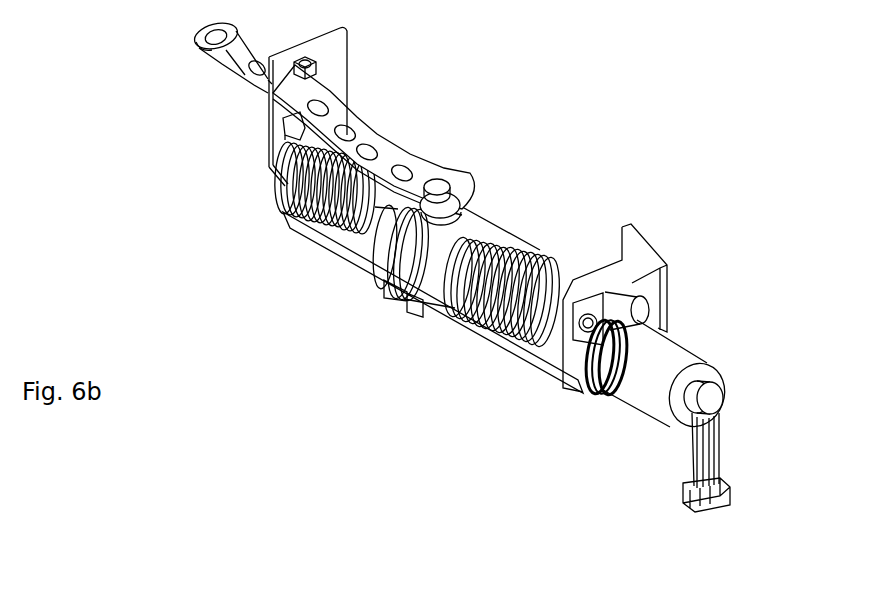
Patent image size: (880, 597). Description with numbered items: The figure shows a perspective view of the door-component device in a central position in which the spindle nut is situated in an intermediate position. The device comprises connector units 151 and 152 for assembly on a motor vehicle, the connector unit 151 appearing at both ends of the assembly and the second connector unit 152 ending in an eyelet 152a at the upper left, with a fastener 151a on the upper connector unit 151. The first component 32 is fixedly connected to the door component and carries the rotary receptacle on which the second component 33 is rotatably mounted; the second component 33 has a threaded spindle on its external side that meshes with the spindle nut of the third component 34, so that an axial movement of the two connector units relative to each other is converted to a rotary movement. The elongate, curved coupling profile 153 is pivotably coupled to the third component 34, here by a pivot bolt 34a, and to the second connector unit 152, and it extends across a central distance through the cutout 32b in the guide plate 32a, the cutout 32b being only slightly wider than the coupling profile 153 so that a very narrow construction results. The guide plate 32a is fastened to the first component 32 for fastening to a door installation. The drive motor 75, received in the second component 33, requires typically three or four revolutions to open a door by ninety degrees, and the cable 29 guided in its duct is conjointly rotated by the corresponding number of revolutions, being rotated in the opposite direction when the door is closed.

The second connector unit 152 is at (185, 21).
The eyelet of arm 152a is at (203, 37).
The connector unit 151 is at (330, 55).
The fastening nut 151a is at (316, 68).
The guide plate 32a is at (267, 102).
The cutout 32b is at (280, 137).
The coupling profile 153 is at (386, 156).
The pivot bolt 34a is at (443, 181).
The third component 34 is at (475, 223).
The first component 32 is at (297, 233).
The second component 33 is at (535, 259).
The drive motor 75 is at (680, 355).
The cable 29 is at (720, 443).